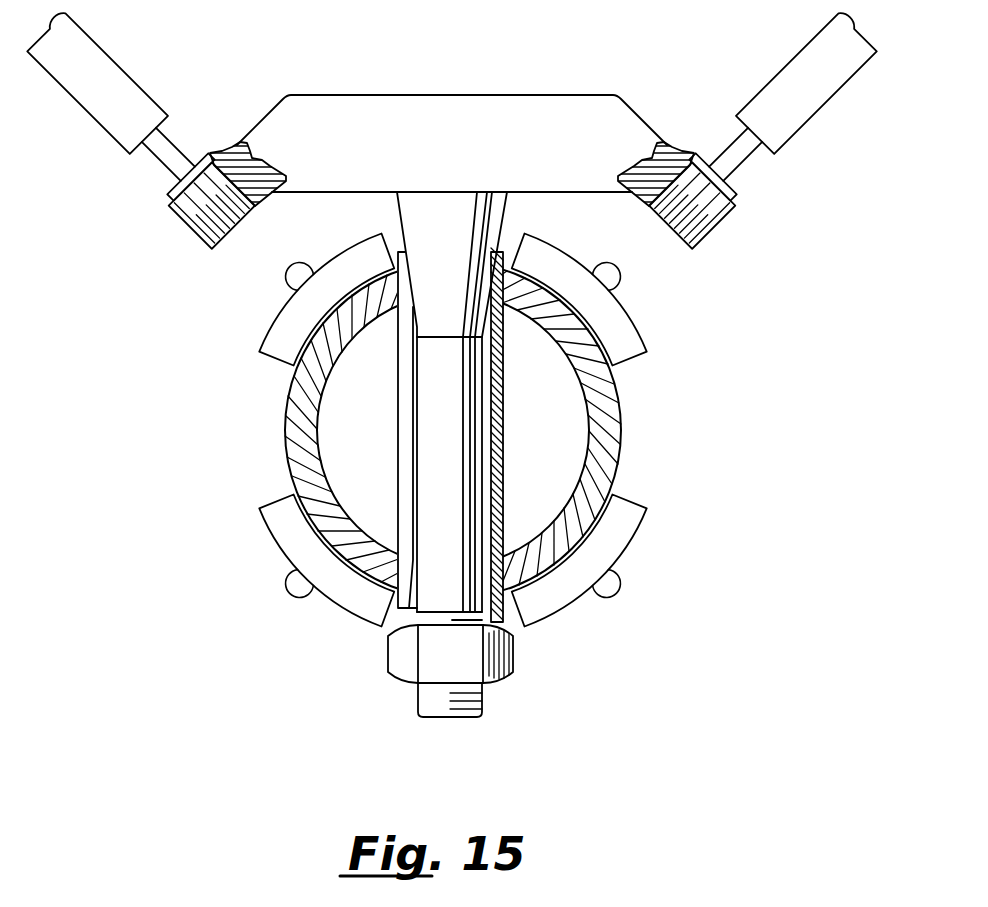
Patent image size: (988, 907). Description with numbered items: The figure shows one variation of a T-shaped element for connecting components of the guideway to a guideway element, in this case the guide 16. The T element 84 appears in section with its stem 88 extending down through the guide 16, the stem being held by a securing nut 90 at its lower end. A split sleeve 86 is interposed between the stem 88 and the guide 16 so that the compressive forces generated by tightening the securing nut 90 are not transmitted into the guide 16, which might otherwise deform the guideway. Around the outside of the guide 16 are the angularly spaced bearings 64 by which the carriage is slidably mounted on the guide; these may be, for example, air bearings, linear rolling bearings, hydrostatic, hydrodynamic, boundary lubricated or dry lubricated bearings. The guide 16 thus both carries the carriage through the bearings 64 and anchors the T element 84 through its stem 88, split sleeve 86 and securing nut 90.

The T element 84 is at (553, 95).
The bearings 64 is at (640, 335).
The guide 16 is at (620, 403).
The stem 88 is at (503, 403).
The split sleeve 86 is at (513, 482).
The securing nut 90 is at (505, 684).